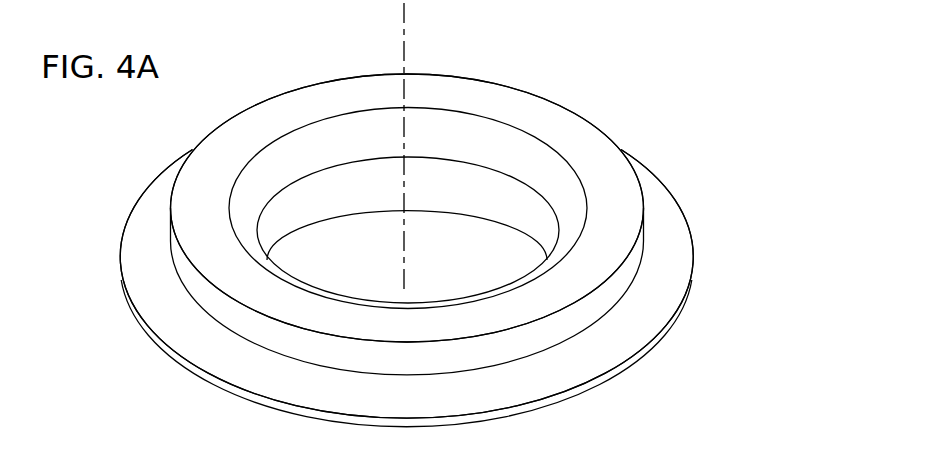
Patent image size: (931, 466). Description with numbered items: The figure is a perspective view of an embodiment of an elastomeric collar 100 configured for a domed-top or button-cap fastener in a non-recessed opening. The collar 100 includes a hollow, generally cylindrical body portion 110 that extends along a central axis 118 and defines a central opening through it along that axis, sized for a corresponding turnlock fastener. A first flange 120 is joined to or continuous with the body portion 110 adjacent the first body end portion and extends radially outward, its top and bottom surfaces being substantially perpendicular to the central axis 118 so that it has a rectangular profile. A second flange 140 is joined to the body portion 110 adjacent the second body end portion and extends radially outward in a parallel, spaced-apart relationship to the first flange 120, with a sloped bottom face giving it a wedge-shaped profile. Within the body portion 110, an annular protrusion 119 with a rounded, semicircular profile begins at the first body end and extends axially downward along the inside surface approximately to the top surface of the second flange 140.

The collar 100 is at (652, 146).
The body portion 110 is at (299, 218).
The central axis 118 is at (404, 27).
The annular protrusion 119 is at (500, 173).
The first flange 120 is at (197, 222).
The second flange 140 is at (173, 317).